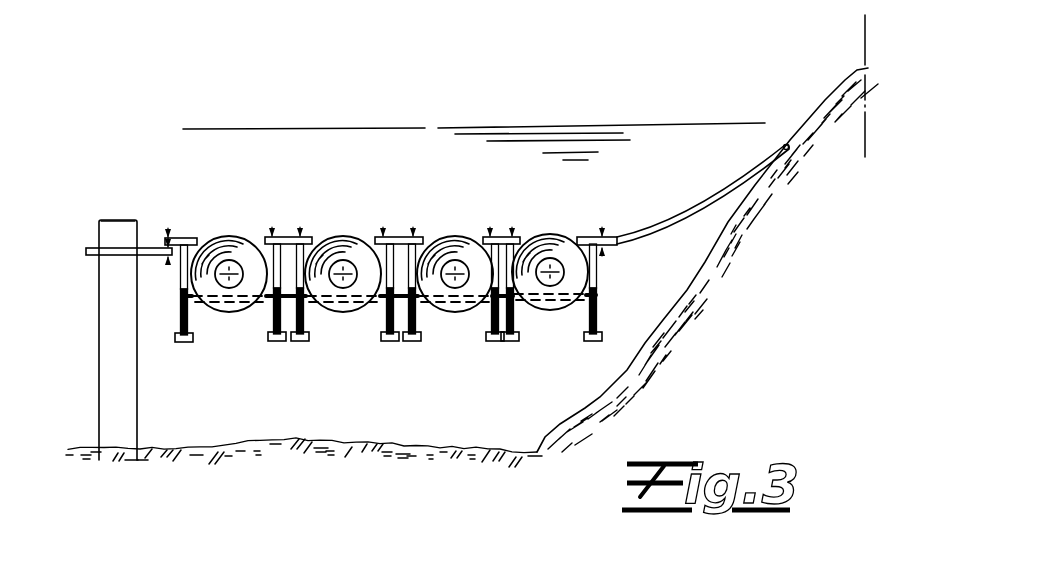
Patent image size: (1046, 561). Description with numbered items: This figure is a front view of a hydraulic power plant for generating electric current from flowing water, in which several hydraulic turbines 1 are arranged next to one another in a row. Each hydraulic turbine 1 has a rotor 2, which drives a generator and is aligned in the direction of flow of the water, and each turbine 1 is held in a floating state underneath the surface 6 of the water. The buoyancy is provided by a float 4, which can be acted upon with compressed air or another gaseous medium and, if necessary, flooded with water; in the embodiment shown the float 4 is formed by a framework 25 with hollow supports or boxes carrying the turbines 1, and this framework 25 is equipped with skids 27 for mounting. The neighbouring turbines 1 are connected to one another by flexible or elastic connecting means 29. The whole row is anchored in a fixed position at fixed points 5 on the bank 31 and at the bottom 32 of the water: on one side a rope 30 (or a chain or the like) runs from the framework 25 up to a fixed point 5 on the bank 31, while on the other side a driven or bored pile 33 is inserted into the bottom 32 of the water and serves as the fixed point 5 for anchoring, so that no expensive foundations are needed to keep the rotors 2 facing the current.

The hydraulic turbine 1 is at (230, 163).
The rotor 2 is at (462, 248).
The float 4 is at (405, 348).
The fixed points 5 is at (113, 205).
The surface of the water 6 is at (612, 122).
The framework 25 is at (600, 272).
The skids 27 is at (507, 348).
The connecting means 29 is at (383, 238).
The ropes 30 is at (705, 197).
The bank 31 is at (853, 87).
The bottom of the water 32 is at (170, 505).
The pile 33 is at (137, 378).